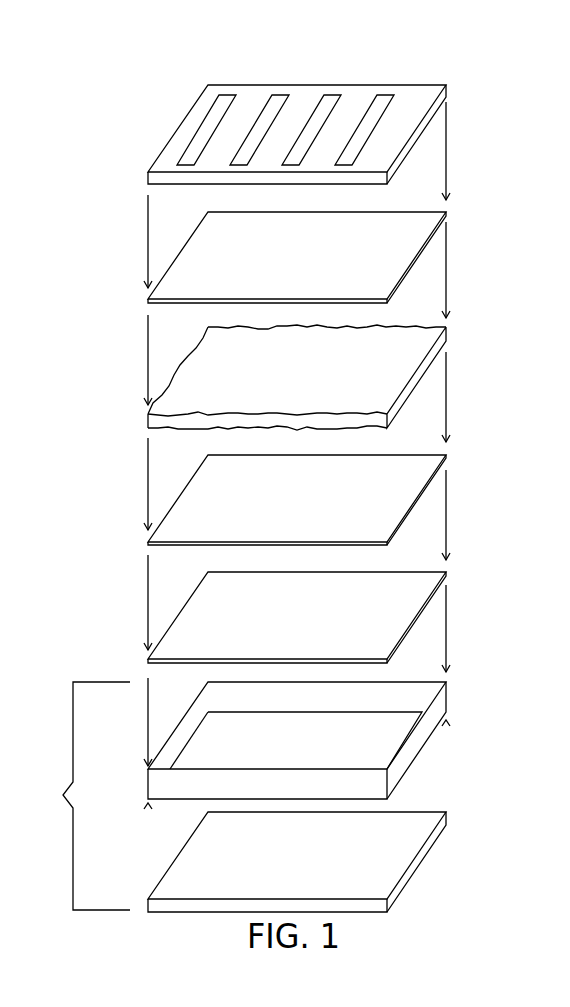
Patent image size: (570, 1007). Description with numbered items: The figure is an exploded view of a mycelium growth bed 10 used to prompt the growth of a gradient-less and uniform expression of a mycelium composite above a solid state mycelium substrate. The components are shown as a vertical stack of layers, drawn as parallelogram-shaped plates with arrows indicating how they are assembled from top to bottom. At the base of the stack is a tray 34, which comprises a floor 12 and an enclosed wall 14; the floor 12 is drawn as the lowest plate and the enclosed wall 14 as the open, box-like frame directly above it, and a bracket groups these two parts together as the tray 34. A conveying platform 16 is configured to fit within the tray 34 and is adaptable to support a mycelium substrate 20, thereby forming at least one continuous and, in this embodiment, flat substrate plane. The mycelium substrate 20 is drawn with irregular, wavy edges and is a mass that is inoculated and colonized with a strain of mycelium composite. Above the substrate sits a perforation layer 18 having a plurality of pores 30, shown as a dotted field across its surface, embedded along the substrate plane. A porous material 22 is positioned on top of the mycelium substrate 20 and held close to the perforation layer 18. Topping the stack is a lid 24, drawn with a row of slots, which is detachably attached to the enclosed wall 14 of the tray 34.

The mycelium growth bed 10 is at (341, 60).
The floor 12 is at (452, 815).
The enclosed wall 14 is at (452, 685).
The conveying platform 16 is at (452, 575).
The perforation layer 18 is at (452, 458).
The mycelium substrate 20 is at (452, 330).
The porous material 22 is at (452, 215).
The lid 24 is at (309, 294).
The pores 30 is at (203, 135).
The tray 34 is at (80, 796).